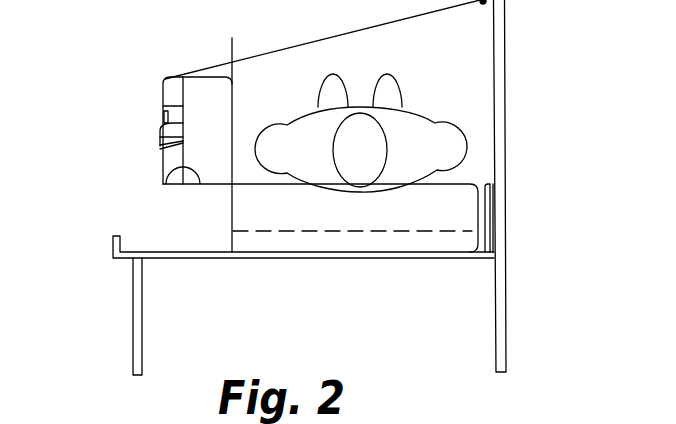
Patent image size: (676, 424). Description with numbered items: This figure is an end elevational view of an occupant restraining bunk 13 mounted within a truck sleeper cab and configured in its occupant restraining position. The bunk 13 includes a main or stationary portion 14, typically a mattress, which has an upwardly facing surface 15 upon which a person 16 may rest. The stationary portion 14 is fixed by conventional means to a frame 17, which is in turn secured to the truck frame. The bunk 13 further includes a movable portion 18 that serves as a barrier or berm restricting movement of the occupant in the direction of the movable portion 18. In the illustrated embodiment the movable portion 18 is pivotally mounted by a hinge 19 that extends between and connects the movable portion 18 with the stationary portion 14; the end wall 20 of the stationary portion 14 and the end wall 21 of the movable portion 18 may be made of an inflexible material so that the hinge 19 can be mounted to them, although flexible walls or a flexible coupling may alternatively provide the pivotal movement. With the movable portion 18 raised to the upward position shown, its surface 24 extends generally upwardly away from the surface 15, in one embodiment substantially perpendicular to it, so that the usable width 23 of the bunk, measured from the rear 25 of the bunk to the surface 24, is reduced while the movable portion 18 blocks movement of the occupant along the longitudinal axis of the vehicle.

The bunk 13 is at (113, 100).
The stationary portion 14 is at (276, 212).
The upwardly facing surface 15 is at (453, 181).
The person 16 is at (417, 128).
The frame 17 is at (180, 259).
The movable portion 18 is at (198, 88).
The hinge 19 is at (231, 183).
The end wall 20 is at (230, 205).
The end wall 21 is at (167, 165).
The usable width 23 is at (493, 51).
The surface 24 is at (233, 98).
The rear 25 is at (490, 213).